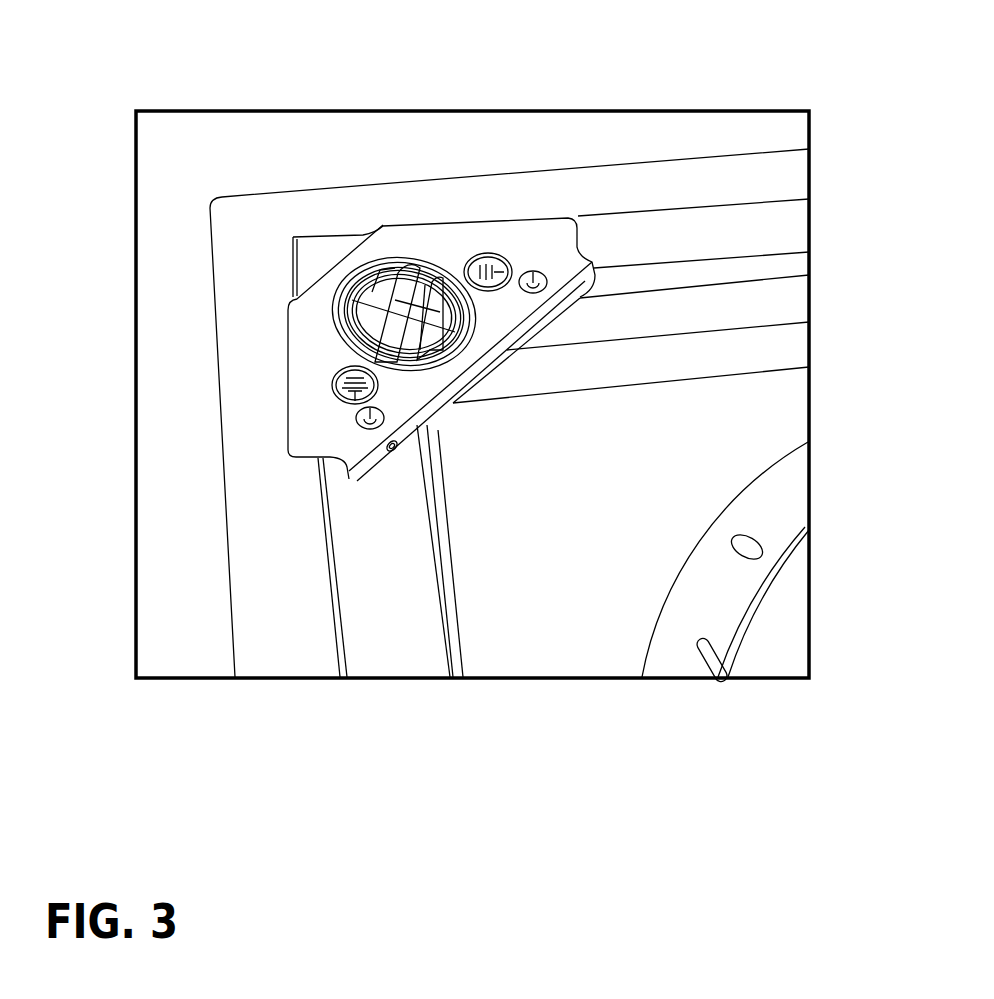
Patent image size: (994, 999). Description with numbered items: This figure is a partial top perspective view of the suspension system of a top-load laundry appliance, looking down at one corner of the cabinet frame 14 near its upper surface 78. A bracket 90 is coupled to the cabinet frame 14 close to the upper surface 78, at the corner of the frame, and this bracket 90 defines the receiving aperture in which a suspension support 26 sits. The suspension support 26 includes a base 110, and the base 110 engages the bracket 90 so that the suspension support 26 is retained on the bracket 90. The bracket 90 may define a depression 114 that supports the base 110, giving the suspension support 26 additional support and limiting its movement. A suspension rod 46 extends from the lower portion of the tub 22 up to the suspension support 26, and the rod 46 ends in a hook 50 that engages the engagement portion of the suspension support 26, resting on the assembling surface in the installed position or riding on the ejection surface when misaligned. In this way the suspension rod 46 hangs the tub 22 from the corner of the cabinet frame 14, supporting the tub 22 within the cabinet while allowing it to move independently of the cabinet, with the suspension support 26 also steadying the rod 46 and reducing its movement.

The cabinet frame 14 is at (765, 173).
The tub 22 is at (767, 506).
The suspension support 26 is at (345, 347).
The suspension rod 46 is at (448, 605).
The hook 50 is at (419, 260).
The upper surface 78 is at (372, 212).
The bracket 90 is at (505, 248).
The base 110 is at (450, 322).
The depression 114 is at (343, 297).